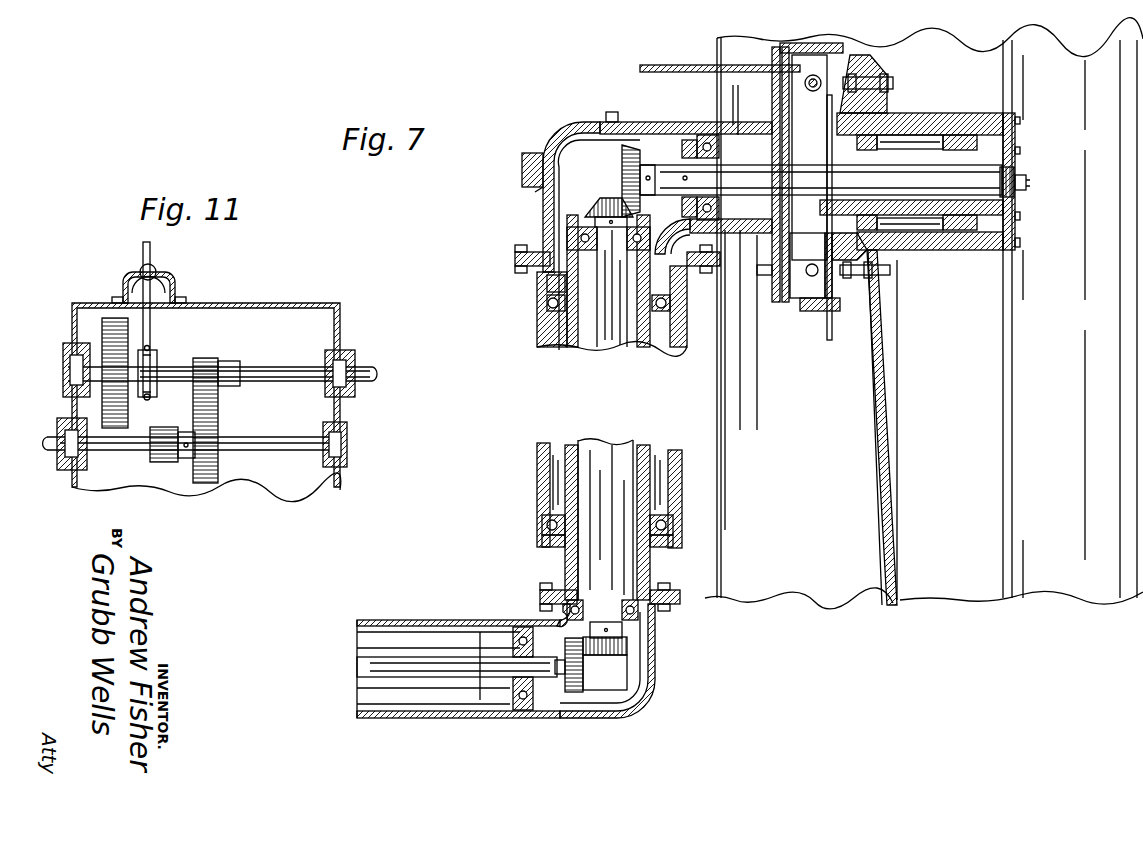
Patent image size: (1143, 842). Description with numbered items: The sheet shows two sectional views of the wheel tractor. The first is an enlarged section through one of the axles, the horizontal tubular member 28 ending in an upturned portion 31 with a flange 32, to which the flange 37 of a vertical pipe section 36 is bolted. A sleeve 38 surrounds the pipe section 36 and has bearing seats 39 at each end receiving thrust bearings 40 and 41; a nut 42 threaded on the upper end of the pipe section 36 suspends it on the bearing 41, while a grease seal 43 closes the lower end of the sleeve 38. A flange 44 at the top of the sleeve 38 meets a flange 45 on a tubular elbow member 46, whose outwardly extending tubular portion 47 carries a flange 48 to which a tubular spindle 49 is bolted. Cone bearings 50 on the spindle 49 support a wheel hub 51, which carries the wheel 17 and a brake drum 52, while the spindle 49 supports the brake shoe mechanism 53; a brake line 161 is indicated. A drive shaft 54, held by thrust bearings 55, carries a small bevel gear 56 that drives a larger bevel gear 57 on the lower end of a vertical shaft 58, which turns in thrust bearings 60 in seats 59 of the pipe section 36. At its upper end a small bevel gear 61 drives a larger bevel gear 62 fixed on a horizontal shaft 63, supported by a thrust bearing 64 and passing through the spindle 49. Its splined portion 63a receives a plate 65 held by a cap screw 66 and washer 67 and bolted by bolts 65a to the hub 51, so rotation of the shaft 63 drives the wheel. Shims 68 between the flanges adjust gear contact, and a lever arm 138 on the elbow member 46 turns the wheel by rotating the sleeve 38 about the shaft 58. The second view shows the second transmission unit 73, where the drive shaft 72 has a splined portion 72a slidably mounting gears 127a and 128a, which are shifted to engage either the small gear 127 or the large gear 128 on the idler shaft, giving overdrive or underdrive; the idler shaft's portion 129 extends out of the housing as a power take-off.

In FIG. 7, the wheel 17 is at (974, 441).
In FIG. 7, the horizontal tubular member 28 is at (357, 622).
In FIG. 7, the upturned portion 31 is at (656, 672).
In FIG. 7, the flange 32 is at (565, 603).
In FIG. 7, the vertical pipe section 36 is at (567, 443).
In FIG. 7, the flange 37 is at (672, 592).
In FIG. 7, the sleeve 38 is at (682, 462).
In FIG. 7, the bearing seat 39 is at (548, 312).
In FIG. 7, the thrust bearing 40 is at (652, 524).
In FIG. 7, the thrust bearing 41 is at (680, 305).
In FIG. 7, the nut 42 is at (548, 292).
In FIG. 7, the grease seal 43 is at (555, 542).
In FIG. 7, the flange 44 is at (517, 265).
In FIG. 7, the flange 45 is at (520, 255).
In FIG. 7, the tubular elbow member 46 is at (578, 122).
In FIG. 7, the outwardly extending tubular portion 47 is at (668, 122).
In FIG. 7, the flange 48 is at (770, 62).
In FIG. 7, the tubular spindle 49 is at (925, 163).
In FIG. 7, the cone bearing 50 is at (860, 215).
In FIG. 7, the wheel hub 51 is at (965, 113).
In FIG. 7, the brake drum 52 is at (820, 47).
In FIG. 7, the brake shoe mechanism 53 is at (839, 197).
In FIG. 7, the drive shaft 54 is at (425, 665).
In FIG. 7, the thrust bearing 55 is at (524, 695).
In FIG. 7, the small bevel gear 56 is at (585, 680).
In FIG. 7, the larger bevel gear 57 is at (606, 652).
In FIG. 7, the vertical shaft 58 is at (612, 350).
In FIG. 7, the seat 59 is at (680, 232).
In FIG. 7, the thrust bearing 60 is at (585, 230).
In FIG. 7, the small bevel gear 61 is at (600, 208).
In FIG. 7, the larger bevel gear 62 is at (624, 168).
In FIG. 7, the horizontal shaft 63 is at (821, 180).
In FIG. 7, the splined portion 63a is at (1013, 172).
In FIG. 7, the thrust bearing 64 is at (706, 143).
In FIG. 7, the plate 65 is at (1012, 140).
In FIG. 7, the bolt 65a is at (1012, 248).
In FIG. 7, the cap screw 66 is at (1030, 182).
In FIG. 7, the washer 67 is at (1012, 205).
In FIG. 7, the shim 68 is at (515, 260).
In FIG. 11, the drive shaft 72 is at (288, 372).
In FIG. 11, the splined portion 72a is at (238, 364).
In FIG. 11, the second transmission unit 73 is at (288, 482).
In FIG. 11, the gear 127 is at (165, 457).
In FIG. 11, the gear 127a is at (126, 412).
In FIG. 11, the gear 128 is at (218, 462).
In FIG. 11, the gear 128a is at (208, 360).
In FIG. 11, the power take-off portion 129 is at (118, 445).
In FIG. 7, the lever arm 138 is at (520, 180).
In FIG. 7, the brake line 161 is at (672, 48).